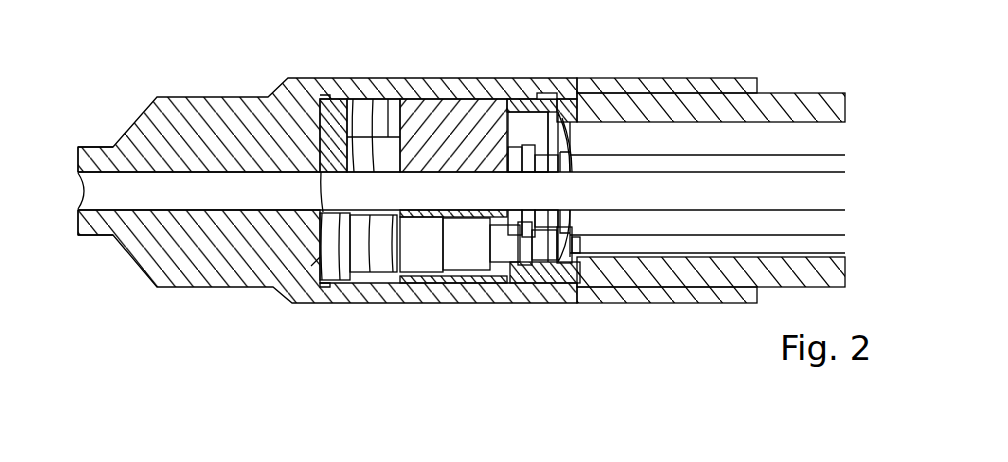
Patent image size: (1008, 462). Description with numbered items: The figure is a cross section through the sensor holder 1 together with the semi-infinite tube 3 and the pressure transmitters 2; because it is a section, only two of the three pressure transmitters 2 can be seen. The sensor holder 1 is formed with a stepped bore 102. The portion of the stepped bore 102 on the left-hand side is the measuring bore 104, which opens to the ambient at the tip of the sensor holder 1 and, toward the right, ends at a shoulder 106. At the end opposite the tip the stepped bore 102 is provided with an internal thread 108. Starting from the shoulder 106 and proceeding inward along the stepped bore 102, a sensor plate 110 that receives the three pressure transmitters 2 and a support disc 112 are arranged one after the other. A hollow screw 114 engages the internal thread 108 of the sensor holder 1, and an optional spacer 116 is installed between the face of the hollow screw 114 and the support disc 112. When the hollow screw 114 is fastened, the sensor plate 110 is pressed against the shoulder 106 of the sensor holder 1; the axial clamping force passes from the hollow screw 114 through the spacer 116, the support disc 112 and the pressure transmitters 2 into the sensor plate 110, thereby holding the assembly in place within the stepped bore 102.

The sensor holder 1 is at (212, 103).
The pressure transmitter 2 is at (388, 147).
The semi-infinite tube 3 is at (470, 190).
The stepped bore 102 is at (360, 103).
The measuring bore 104 is at (113, 172).
The shoulder 106 is at (318, 258).
The internal thread 108 is at (597, 93).
The sensor plate 110 is at (322, 100).
The support disc 112 is at (435, 103).
The hollow screw 114 is at (790, 105).
The spacer 116 is at (525, 105).